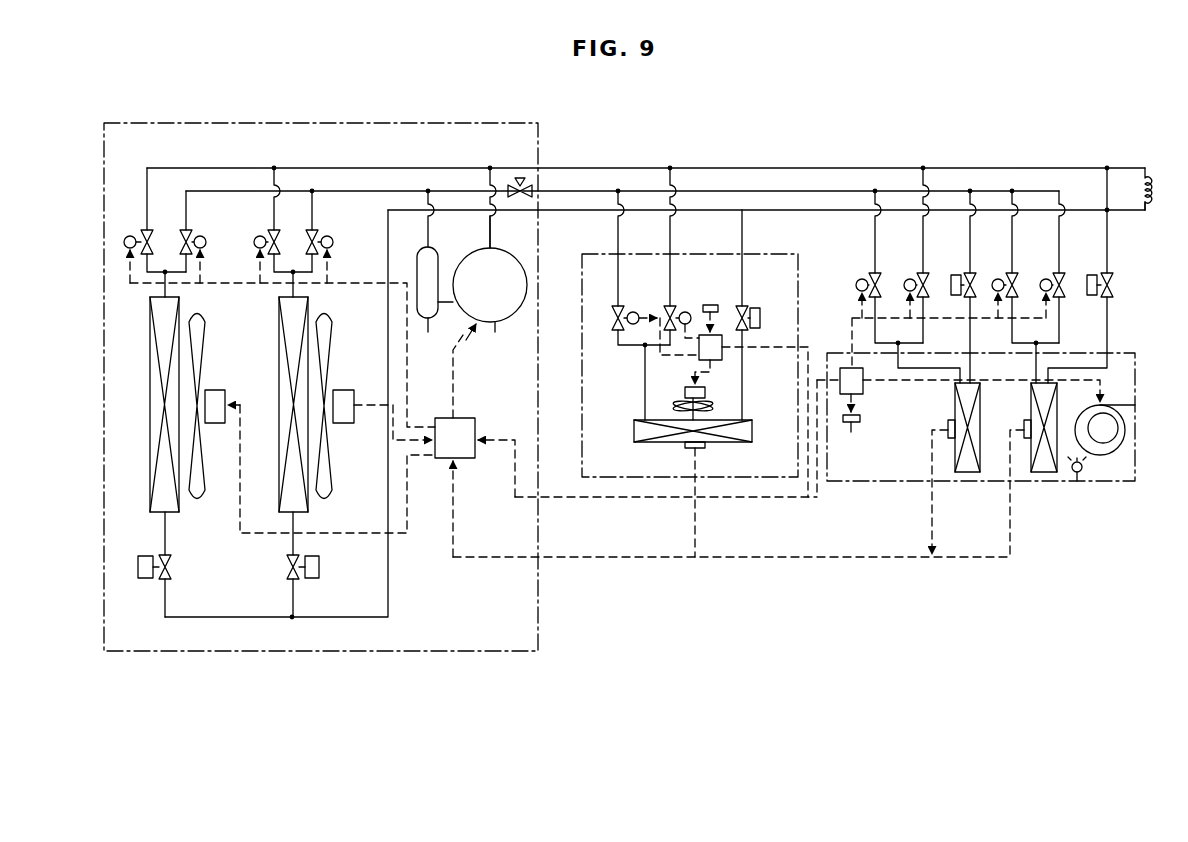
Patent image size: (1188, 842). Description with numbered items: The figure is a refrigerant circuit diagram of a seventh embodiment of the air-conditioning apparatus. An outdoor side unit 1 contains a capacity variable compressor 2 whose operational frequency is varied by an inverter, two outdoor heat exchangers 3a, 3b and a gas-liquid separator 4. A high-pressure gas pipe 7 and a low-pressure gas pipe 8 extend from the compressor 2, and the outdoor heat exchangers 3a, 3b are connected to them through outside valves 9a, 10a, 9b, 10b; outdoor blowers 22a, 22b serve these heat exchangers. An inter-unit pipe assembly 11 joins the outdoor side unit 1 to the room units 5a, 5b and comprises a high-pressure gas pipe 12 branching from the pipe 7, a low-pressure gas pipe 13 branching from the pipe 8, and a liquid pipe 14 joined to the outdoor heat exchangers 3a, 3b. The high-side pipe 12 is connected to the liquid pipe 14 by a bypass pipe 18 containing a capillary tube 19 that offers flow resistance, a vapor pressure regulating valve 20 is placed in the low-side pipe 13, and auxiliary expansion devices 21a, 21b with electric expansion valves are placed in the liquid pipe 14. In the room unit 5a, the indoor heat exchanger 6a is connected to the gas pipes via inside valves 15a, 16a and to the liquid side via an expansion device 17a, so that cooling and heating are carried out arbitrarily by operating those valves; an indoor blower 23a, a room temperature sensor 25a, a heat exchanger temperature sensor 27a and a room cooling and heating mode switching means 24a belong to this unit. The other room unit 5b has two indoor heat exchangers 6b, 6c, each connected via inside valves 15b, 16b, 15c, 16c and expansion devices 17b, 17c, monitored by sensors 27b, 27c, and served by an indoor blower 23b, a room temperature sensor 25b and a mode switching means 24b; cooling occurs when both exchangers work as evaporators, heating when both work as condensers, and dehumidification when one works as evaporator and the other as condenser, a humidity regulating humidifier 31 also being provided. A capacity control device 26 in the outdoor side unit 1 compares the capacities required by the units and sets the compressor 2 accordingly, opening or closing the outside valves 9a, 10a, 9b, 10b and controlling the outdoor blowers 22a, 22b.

The outdoor side unit 1 is at (540, 620).
The capacity variable compressor 2 is at (490, 333).
The outdoor heat exchanger 3a is at (152, 470).
The outdoor heat exchanger 3b is at (281, 470).
The gas-liquid separator 4 is at (428, 322).
The room unit 5a is at (766, 266).
The room unit 5b is at (1126, 353).
The indoor heat exchanger 6a is at (735, 443).
The indoor heat exchanger 6b is at (967, 472).
The indoor heat exchanger 6c is at (1044, 472).
The high-pressure gas pipe 7 is at (494, 232).
The low-pressure gas pipe 8 is at (431, 232).
The outside valve 9a is at (134, 236).
The outside valve 9b is at (262, 236).
The outside valve 10a is at (200, 236).
The outside valve 10b is at (327, 236).
The inter-unit pipe assembly 11 is at (635, 140).
The high-pressure gas pipe 12 is at (565, 168).
The low-pressure gas pipe 13 is at (588, 191).
The liquid pipe 14 is at (603, 210).
The inside valve 15a is at (667, 310).
The inside valve 15b is at (907, 278).
The inside valve 15c is at (1043, 278).
The inside valve 16a is at (616, 330).
The inside valve 16b is at (859, 278).
The inside valve 16c is at (996, 278).
The expansion device 17a is at (756, 308).
The expansion device 17b is at (955, 276).
The expansion device 17c is at (1092, 276).
The bypass pipe 18 is at (1149, 206).
The capillary tube 19 is at (1149, 184).
The vapor pressure regulating valve 20 is at (519, 180).
The auxiliary expansion device 21a is at (171, 570).
The auxiliary expansion device 21b is at (317, 570).
The outdoor blower 22a is at (216, 390).
The outdoor blower 22b is at (345, 390).
The indoor blower 23a is at (672, 402).
The indoor blower 23b is at (1123, 446).
The room cooling and heating mode switching means 24a is at (722, 358).
The room cooling and heating mode switching means 24b is at (850, 368).
The room temperature sensor 25a is at (710, 305).
The room temperature sensor 25b is at (859, 427).
The capacity control device 26 is at (460, 458).
The sensor 27a is at (683, 448).
The sensor 27b is at (947, 427).
The sensor 27c is at (1023, 427).
The humidity regulating humidifier 31 is at (1075, 481).